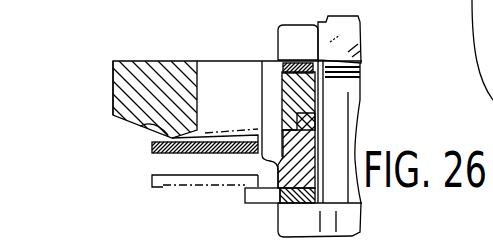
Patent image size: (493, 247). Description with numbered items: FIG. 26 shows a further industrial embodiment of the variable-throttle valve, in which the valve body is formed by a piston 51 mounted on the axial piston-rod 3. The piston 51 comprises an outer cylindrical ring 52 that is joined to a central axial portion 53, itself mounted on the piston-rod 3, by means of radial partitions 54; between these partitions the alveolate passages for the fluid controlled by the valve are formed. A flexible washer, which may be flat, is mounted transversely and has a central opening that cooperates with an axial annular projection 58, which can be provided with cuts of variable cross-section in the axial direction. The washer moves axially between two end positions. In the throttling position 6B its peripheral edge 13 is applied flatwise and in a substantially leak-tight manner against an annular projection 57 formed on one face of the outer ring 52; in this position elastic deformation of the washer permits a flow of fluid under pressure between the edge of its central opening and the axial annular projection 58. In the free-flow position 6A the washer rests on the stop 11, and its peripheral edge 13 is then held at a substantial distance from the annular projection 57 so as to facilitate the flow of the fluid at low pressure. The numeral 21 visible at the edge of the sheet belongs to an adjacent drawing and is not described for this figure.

The piston 51 is at (106, 76).
The outer cylindrical ring 52 is at (142, 82).
The axial portion 53 is at (298, 102).
The radial partitions 54 is at (232, 76).
The annular projection 57 is at (147, 127).
The axial annular projection 58 is at (236, 174).
The peripheral edge 13 is at (150, 150).
The free-flow position 6A is at (152, 188).
The throttling position 6B is at (210, 134).
The stop 11 is at (263, 200).
The piston-rod 3 is at (328, 224).
The adjacent component 21 is at (492, 102).